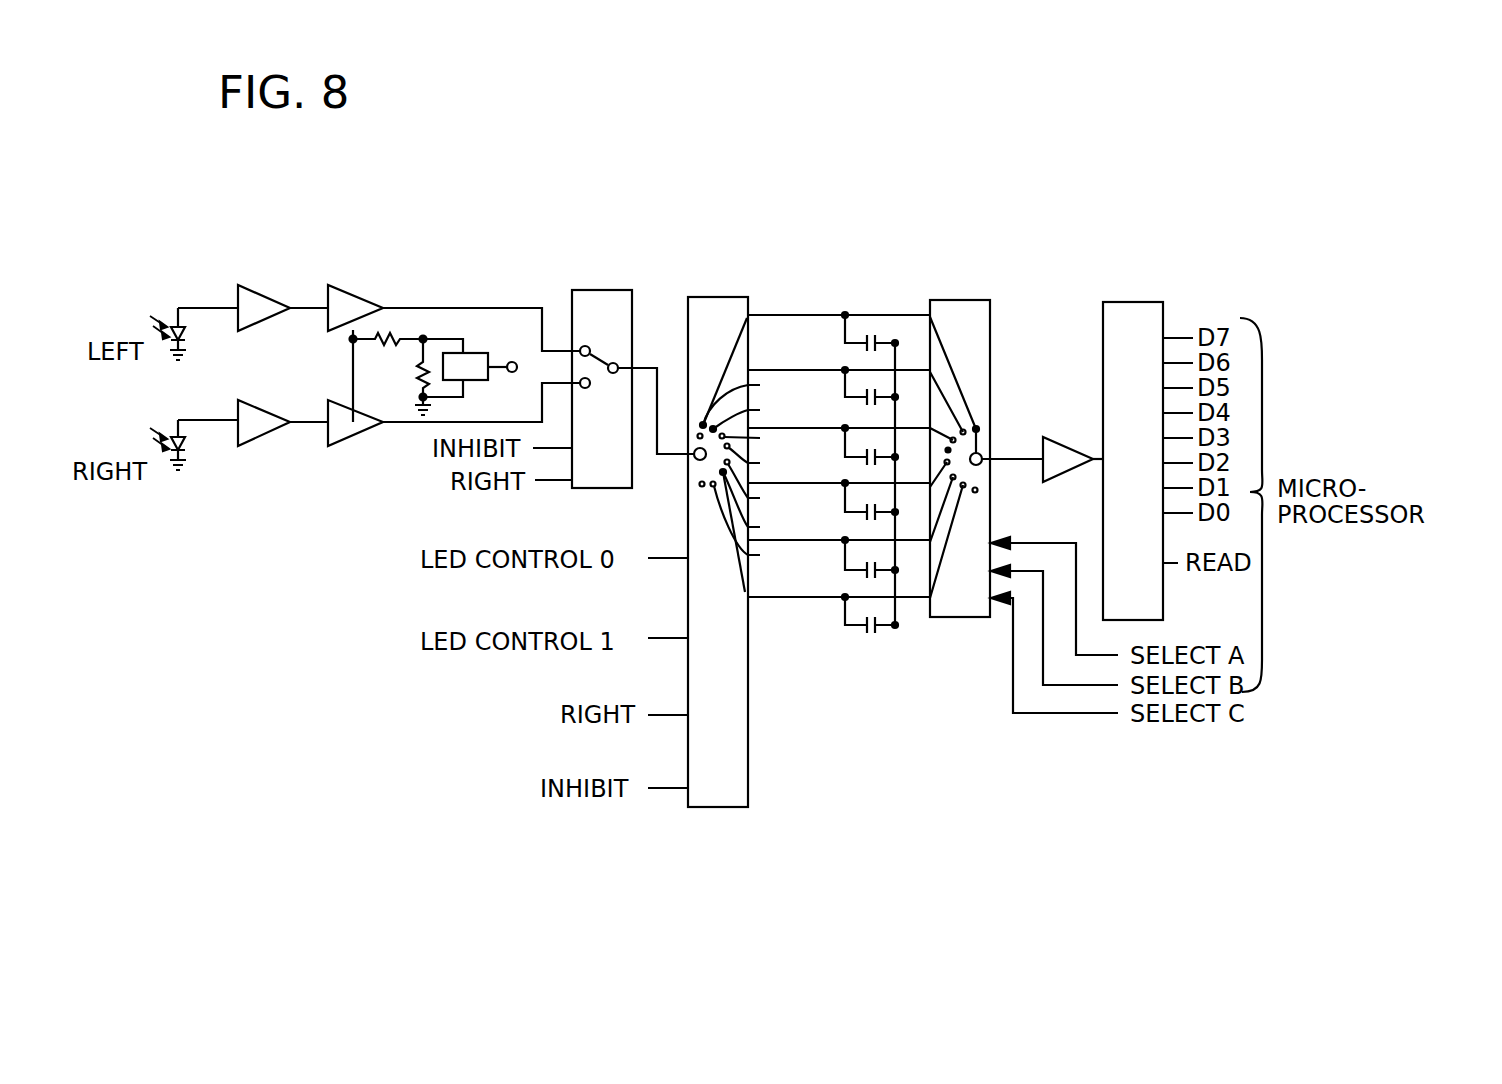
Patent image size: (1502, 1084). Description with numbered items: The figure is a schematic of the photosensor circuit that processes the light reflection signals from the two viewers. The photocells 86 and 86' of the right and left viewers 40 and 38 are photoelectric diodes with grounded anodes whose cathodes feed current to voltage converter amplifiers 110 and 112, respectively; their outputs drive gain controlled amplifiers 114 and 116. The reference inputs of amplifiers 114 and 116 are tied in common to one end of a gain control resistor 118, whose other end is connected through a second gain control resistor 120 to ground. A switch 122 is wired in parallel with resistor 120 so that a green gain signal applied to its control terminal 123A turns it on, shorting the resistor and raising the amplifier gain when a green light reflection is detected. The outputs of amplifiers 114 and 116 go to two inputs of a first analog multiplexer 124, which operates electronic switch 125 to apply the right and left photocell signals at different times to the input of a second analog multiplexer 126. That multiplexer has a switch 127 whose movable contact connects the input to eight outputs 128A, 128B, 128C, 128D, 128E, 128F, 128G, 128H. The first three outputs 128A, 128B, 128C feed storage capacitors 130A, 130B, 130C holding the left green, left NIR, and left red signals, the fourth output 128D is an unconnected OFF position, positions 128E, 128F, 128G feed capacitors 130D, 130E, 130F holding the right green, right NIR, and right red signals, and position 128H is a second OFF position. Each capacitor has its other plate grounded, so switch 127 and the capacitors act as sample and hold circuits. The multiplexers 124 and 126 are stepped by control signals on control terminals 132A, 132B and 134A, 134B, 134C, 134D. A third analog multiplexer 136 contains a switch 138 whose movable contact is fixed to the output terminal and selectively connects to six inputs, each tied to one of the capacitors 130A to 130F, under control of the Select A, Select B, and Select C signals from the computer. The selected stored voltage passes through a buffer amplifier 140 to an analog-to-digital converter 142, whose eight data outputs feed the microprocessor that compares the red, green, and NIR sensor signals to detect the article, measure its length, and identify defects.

The left viewer 38 is at (147, 306).
The right viewer 40 is at (137, 435).
The right photocell 86 is at (191, 462).
The left photocell 86' is at (156, 291).
The current to voltage converter amplifier 110 is at (258, 432).
The current to voltage converter amplifier 112 is at (258, 298).
The gain controlled amplifier 114 is at (348, 442).
The gain controlled amplifier 116 is at (356, 290).
The gain control resistor 118 is at (399, 334).
The second gain control resistor 120 is at (418, 382).
The switch 122 is at (472, 353).
The control terminal 123A is at (513, 362).
The first analog multiplexer 124 is at (627, 463).
The electronic switch 125 is at (610, 350).
The second analog multiplexer 126 is at (690, 315).
The switch 127 is at (697, 447).
The first output 128A is at (764, 398).
The second output 128B is at (767, 414).
The third output 128C is at (772, 438).
The fourth output 128D is at (776, 461).
The fifth position 128E is at (774, 486).
The sixth position 128F is at (772, 506).
The seventh position 128G is at (769, 526).
The eighth position 128H is at (701, 487).
The storage capacitor 130A is at (862, 337).
The storage capacitor 130B is at (880, 392).
The storage capacitor 130C is at (865, 445).
The storage capacitor 130D is at (862, 518).
The storage capacitor 130E is at (860, 580).
The storage capacitor 130F is at (878, 632).
The control terminal 132A is at (558, 482).
The control terminal 132B is at (558, 448).
The control terminal 134A is at (670, 558).
The control terminal 134B is at (670, 643).
The control terminal 134C is at (670, 720).
The control terminal 134D is at (670, 795).
The third analog multiplexer 136 is at (992, 348).
The switch 138 is at (980, 447).
The buffer amplifier 140 is at (1082, 470).
The analog-to-digital converter 142 is at (1163, 320).